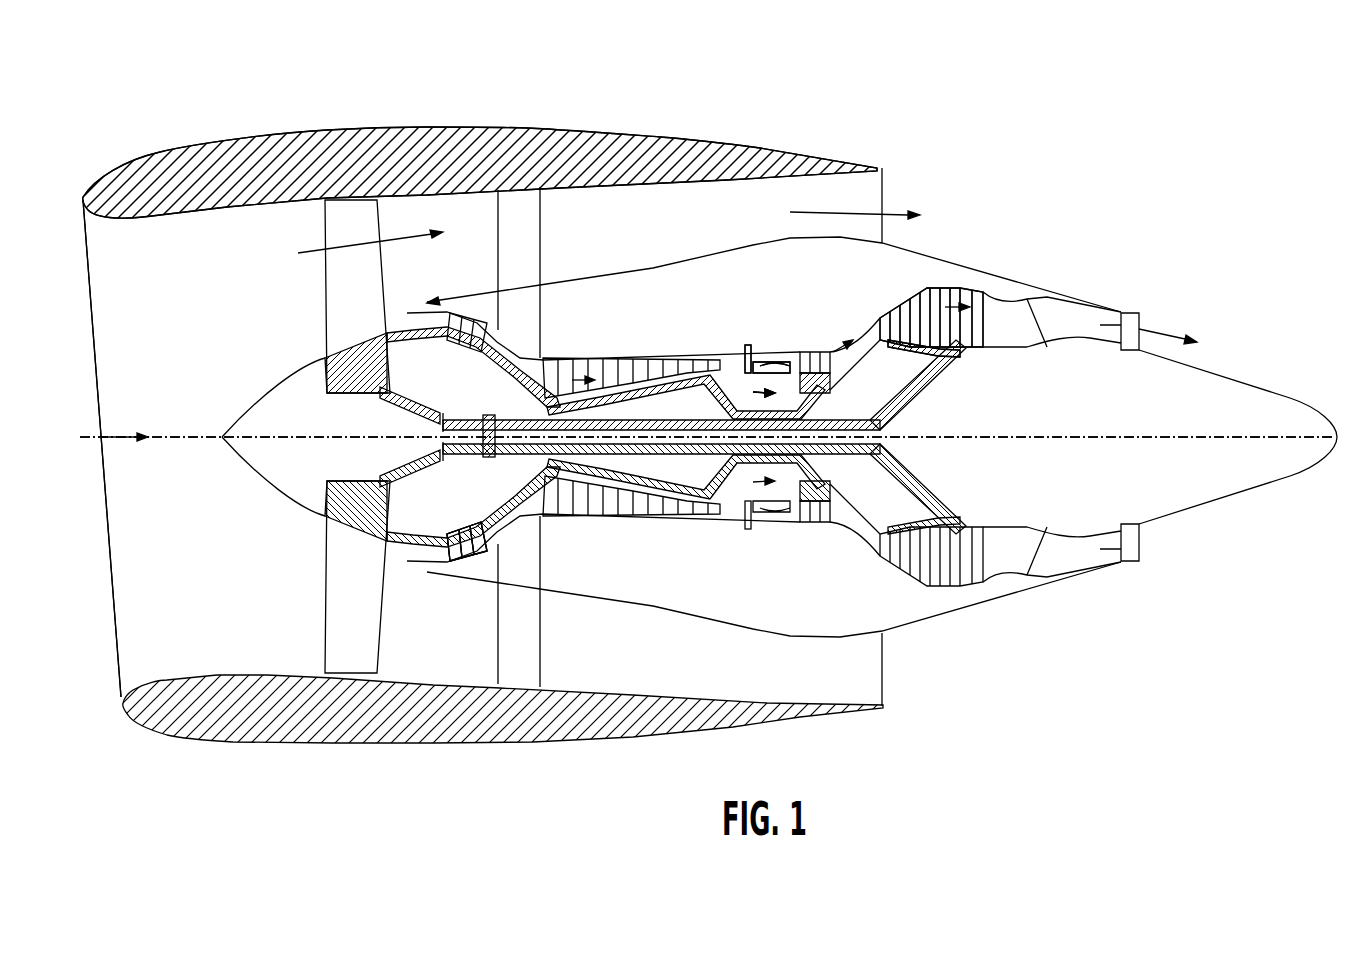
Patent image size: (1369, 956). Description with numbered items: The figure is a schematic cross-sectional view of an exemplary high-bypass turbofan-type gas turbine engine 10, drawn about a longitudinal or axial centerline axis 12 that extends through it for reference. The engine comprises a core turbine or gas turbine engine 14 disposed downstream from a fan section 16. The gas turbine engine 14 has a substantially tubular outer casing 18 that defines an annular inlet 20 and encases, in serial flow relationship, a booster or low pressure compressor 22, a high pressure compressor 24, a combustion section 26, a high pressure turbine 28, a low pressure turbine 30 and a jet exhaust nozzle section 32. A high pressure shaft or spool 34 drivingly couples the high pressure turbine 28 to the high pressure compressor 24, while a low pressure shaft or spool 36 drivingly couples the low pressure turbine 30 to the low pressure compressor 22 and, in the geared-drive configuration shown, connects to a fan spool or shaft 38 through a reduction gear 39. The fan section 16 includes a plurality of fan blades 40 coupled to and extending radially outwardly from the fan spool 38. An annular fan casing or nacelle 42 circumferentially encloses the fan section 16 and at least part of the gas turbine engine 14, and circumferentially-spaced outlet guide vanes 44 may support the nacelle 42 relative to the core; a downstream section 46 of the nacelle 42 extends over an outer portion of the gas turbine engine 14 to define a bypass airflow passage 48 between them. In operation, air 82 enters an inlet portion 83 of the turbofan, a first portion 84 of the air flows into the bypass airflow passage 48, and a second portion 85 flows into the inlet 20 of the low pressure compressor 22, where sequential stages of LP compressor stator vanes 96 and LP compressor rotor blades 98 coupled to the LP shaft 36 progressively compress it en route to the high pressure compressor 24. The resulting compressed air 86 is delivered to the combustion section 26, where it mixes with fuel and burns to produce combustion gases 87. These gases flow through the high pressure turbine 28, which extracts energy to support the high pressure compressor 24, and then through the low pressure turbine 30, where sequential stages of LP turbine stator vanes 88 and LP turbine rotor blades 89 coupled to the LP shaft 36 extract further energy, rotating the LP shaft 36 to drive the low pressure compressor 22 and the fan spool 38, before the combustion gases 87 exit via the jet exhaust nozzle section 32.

The gas turbine engine 10 is at (1046, 136).
The longitudinal or axial centerline axis 12 is at (1083, 437).
The core turbine or gas turbine engine 14 is at (735, 312).
The fan section 16 is at (368, 118).
The outer casing 18 is at (708, 620).
The annular inlet 20 is at (443, 557).
The low pressure (LP) compressor 22 is at (497, 520).
The high pressure (HP) compressor 24 is at (577, 507).
The combustion section 26 is at (770, 507).
The high pressure (HP) turbine 28 is at (825, 511).
The low pressure (LP) turbine 30 is at (975, 596).
The jet exhaust nozzle section 32 is at (1136, 325).
The high pressure (HP) shaft or spool 34 is at (779, 395).
The low pressure (LP) shaft or spool 36 is at (491, 415).
The fan spool or shaft 38 is at (392, 398).
The reduction gear 39 is at (487, 458).
The fan blades 40 is at (325, 607).
The annular fan casing or nacelle 42 is at (372, 748).
The outlet guide vanes 44 is at (540, 205).
The downstream section of the nacelle 46 is at (782, 150).
The bypass airflow passage 48 is at (677, 209).
The air 82 is at (122, 435).
The inlet portion 83 is at (118, 662).
The first portion of the air 84 is at (343, 243).
The second portion of the air 85 is at (413, 313).
The compressed air 86 is at (748, 365).
The combustion gases 87 is at (818, 352).
The LP turbine stator vanes 88 is at (889, 312).
The LP turbine rotor blades 89 is at (895, 302).
The LP compressor stator vanes 96 is at (452, 560).
The LP compressor rotor blades 98 is at (478, 560).